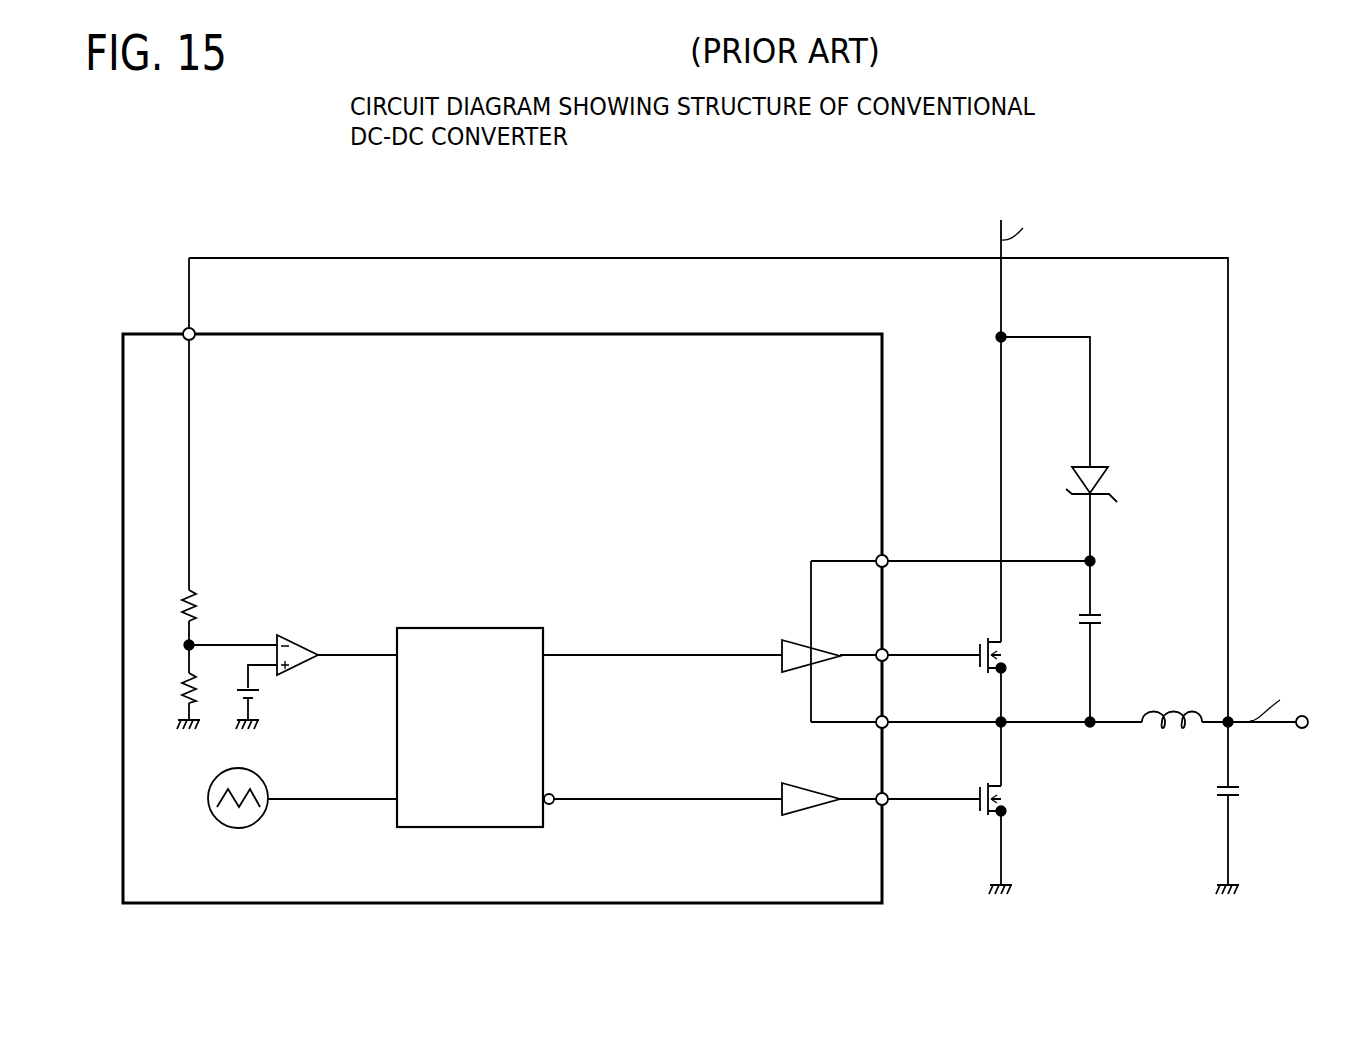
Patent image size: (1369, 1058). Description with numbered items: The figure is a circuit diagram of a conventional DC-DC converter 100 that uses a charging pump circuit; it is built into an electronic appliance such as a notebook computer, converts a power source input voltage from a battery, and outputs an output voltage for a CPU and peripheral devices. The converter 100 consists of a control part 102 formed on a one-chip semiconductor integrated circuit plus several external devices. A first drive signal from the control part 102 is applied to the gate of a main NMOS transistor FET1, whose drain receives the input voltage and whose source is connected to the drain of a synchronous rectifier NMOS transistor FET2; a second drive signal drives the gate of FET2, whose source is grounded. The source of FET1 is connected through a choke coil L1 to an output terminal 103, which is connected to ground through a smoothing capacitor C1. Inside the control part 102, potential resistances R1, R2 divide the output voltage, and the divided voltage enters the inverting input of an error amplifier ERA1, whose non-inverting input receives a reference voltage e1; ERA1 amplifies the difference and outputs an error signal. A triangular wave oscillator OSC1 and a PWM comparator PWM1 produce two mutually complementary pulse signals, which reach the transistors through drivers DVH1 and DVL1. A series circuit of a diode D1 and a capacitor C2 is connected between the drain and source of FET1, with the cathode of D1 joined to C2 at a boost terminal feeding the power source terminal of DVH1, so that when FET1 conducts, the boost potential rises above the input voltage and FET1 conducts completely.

The DC-DC converter 100 is at (706, 229).
The control part 102 is at (318, 333).
The output terminal 103 is at (1308, 719).
The potential resistance R1 is at (172, 605).
The potential resistance R2 is at (172, 688).
The error amplifier ERA1 is at (253, 646).
The reference voltage e1 is at (260, 706).
The triangular wave oscillator OSC1 is at (302, 808).
The PWM comparator PWM1 is at (545, 736).
The driver DVH1 is at (810, 641).
The driver DVL1 is at (816, 785).
The main NMOS transistor FET1 is at (1019, 655).
The synchronous rectifier NMOS transistor FET2 is at (1019, 799).
The diode D1 is at (1105, 484).
The capacitor C2 is at (1074, 621).
The choke coil L1 is at (1172, 703).
The smoothing capacitor C1 is at (1245, 791).